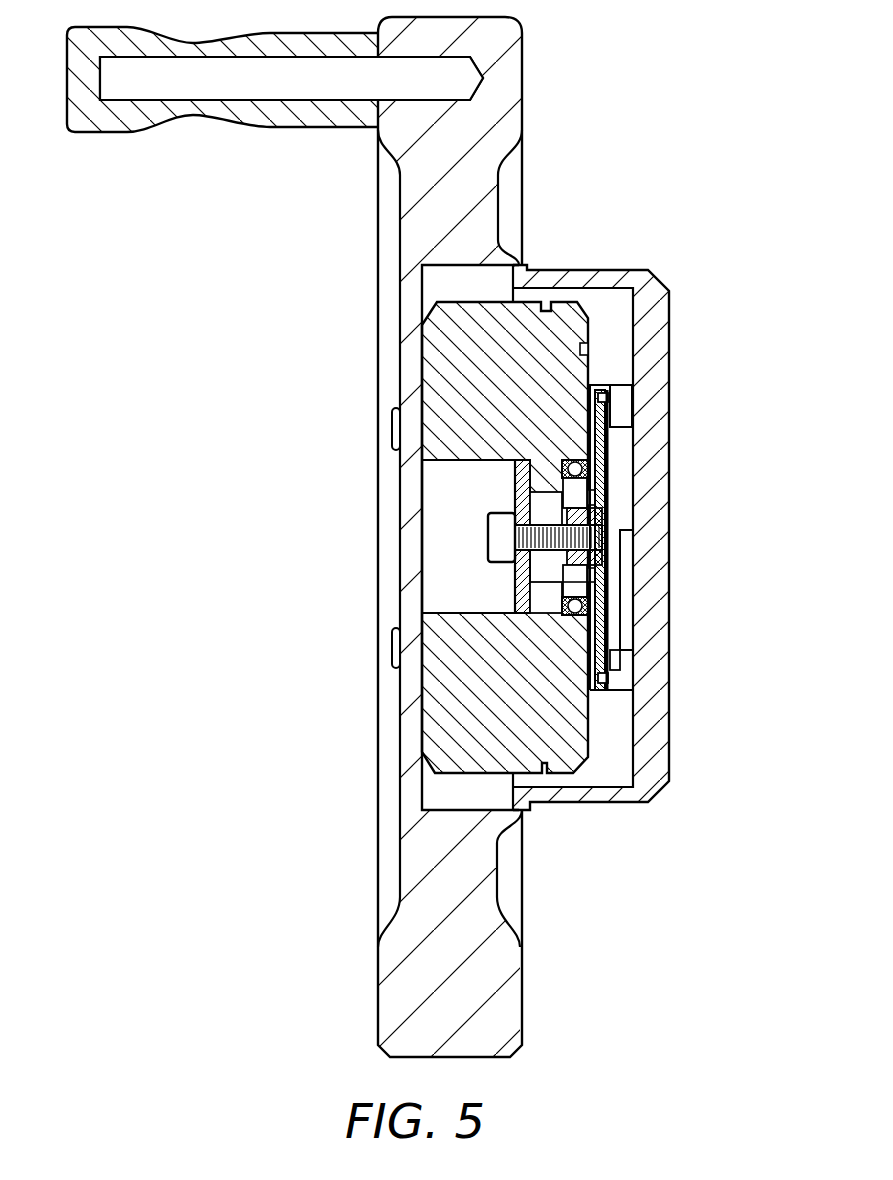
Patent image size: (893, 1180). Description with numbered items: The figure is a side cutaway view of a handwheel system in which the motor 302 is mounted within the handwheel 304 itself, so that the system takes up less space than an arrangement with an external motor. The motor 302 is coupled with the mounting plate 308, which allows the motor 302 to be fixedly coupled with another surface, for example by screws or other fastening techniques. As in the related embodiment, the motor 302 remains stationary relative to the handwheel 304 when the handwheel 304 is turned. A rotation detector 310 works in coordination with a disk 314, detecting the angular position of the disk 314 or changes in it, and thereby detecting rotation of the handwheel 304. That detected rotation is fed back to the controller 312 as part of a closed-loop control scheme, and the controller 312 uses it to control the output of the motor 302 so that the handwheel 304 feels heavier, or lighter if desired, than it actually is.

The motor 302 is at (427, 720).
The handwheel 304 is at (378, 983).
The mounting plate 308 is at (657, 420).
The rotation detector 310 is at (618, 673).
The controller 312 is at (627, 597).
The disk 314 is at (610, 498).